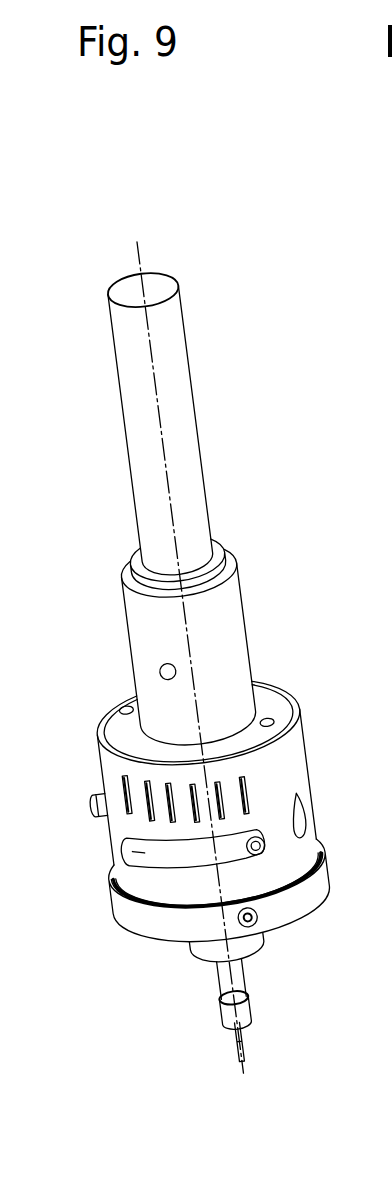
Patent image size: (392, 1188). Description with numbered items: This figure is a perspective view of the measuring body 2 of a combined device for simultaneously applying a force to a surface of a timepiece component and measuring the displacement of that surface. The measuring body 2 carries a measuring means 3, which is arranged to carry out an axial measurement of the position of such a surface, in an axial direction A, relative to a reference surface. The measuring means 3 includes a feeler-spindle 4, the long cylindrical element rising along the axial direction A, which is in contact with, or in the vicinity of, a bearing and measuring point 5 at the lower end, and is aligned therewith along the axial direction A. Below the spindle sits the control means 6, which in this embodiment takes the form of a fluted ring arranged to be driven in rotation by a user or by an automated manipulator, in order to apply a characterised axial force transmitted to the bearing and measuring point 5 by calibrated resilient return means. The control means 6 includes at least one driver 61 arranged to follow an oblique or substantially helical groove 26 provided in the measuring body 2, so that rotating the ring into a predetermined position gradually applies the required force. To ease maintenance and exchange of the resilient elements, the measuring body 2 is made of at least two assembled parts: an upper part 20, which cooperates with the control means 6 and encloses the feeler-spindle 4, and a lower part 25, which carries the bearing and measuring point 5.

The axial direction A is at (153, 249).
The measuring body 2 is at (270, 584).
The measuring means 3 is at (212, 334).
The feeler-spindle 4 is at (167, 384).
The bearing and measuring point 5 is at (245, 1006).
The control means 6 is at (275, 777).
The upper part 20 is at (215, 652).
The lower part 25 is at (312, 885).
The helical groove 26 is at (306, 813).
The driver 61 is at (96, 813).